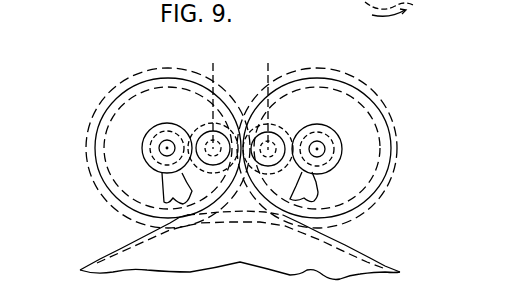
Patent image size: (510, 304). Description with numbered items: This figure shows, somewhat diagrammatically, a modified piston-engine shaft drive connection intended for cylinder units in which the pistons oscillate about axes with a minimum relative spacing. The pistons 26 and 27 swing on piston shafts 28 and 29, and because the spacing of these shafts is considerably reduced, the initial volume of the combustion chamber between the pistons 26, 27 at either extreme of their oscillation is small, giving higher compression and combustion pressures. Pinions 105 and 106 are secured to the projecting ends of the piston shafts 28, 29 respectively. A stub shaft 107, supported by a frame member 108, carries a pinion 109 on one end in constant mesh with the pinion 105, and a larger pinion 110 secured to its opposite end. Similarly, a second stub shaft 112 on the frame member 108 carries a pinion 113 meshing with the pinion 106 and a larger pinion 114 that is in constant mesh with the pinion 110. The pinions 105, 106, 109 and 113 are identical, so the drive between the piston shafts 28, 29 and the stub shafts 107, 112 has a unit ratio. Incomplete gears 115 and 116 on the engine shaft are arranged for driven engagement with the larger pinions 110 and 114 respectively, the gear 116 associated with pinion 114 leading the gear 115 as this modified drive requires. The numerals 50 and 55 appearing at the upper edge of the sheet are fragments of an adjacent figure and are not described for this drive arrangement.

The piston 26 is at (213, 64).
The piston 27 is at (271, 65).
The piston shaft 28 is at (206, 130).
The piston shaft 29 is at (277, 128).
The pinion 105 is at (195, 129).
The pinion 106 is at (289, 130).
The stub shaft 107 is at (160, 142).
The frame member 108 is at (167, 192).
The pinion 109 is at (143, 157).
The larger pinion 110 is at (119, 213).
The stub shaft 112 is at (324, 143).
The pinion 113 is at (342, 158).
The larger pinion 114 is at (378, 202).
The incomplete gear 115 is at (120, 242).
The incomplete gear 116 is at (97, 263).
The fragment of adjacent figure 50 is at (368, 6).
The fragment of adjacent figure 55 is at (416, 6).